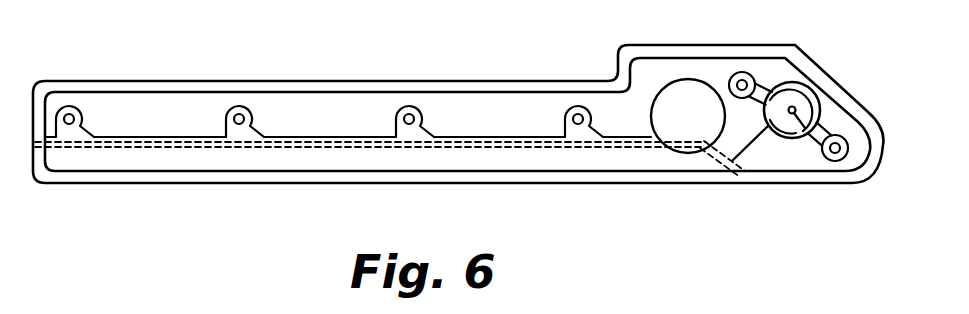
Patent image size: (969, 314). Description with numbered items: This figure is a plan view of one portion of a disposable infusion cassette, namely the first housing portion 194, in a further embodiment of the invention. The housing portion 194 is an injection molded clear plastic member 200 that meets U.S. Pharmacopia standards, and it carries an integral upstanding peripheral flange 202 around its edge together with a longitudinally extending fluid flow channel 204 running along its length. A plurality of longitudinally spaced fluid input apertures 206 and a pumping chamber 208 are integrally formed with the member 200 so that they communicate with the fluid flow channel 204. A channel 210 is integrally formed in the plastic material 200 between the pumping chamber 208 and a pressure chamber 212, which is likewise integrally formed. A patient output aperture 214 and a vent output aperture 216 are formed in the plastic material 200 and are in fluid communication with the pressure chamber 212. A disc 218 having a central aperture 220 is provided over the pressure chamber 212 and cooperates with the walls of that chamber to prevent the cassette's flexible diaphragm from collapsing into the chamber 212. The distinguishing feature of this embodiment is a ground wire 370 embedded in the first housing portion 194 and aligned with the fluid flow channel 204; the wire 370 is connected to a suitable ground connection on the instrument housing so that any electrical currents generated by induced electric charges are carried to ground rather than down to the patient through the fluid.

The first housing portion 194 is at (458, 129).
The injection molded clear plastic member 200 is at (317, 101).
The integral upstanding peripheral flange 202 is at (455, 82).
The longitudinally extending fluid flow channel 204 is at (317, 140).
The fluid input apertures 206 is at (86, 117).
The pumping chamber 208 is at (708, 124).
The channel 210 is at (746, 169).
The pressure chamber 212 is at (811, 92).
The patient output aperture 214 is at (752, 76).
The vent output aperture 216 is at (828, 161).
The disc 218 is at (818, 99).
The central aperture 220 is at (806, 137).
The ground wire 370 is at (67, 143).